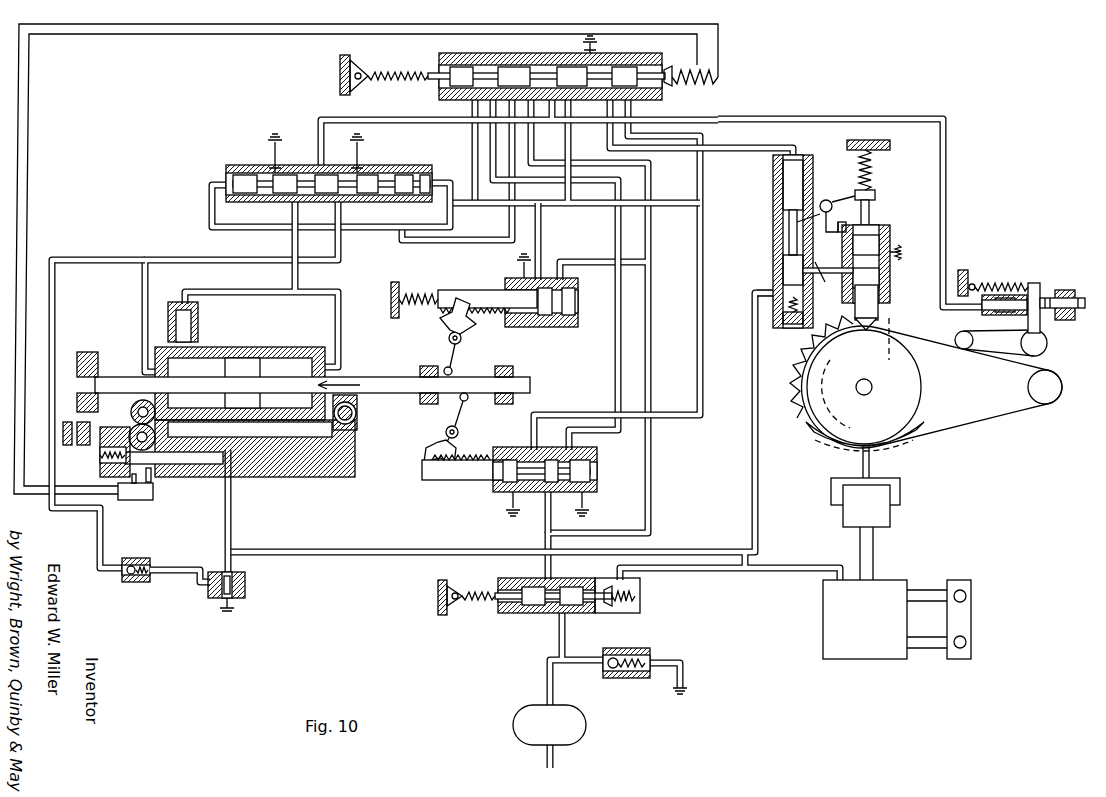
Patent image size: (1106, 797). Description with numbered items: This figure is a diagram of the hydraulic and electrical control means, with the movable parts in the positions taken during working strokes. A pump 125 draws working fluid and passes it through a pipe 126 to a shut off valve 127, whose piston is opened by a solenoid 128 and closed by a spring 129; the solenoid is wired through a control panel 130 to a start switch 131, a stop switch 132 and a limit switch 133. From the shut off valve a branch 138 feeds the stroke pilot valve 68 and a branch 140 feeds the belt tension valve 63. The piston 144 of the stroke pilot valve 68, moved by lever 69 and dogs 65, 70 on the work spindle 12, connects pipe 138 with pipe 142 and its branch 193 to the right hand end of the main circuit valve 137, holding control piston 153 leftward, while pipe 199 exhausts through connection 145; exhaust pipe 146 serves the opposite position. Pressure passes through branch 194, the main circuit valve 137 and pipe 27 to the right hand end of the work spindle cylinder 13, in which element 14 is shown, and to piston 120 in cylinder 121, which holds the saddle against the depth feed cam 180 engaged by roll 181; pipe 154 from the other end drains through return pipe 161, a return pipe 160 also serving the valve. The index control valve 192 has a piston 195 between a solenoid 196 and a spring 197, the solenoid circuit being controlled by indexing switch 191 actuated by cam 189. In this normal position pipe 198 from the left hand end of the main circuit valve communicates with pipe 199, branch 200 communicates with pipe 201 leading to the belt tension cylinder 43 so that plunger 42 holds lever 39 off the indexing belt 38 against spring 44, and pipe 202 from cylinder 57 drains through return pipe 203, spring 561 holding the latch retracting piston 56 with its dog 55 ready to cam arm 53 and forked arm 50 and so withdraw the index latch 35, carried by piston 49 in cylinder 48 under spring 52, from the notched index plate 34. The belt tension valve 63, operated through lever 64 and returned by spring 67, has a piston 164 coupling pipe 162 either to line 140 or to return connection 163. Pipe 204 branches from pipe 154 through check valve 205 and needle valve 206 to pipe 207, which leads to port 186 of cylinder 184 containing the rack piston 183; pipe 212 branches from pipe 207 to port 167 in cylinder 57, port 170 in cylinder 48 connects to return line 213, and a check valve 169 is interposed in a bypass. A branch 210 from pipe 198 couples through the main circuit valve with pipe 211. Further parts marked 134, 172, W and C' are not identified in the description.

The work spindle 12 is at (385, 393).
The work spindle cylinder 13 is at (300, 354).
The piston 14 is at (240, 372).
The pipe 27 is at (300, 276).
The index plate 34 is at (805, 377).
The index latch 35 is at (872, 335).
The belt 38 is at (1003, 418).
The belt tension lever 39 is at (1000, 347).
The plunger 42 is at (1008, 311).
The hydraulic cylinder 43 is at (982, 310).
The spring 44 is at (1005, 287).
The cylinder 48 is at (888, 230).
The piston 49 is at (880, 283).
The forked arm 50 is at (862, 206).
The spring 52 is at (870, 178).
The arm 53 is at (833, 236).
The dog 55 is at (826, 200).
The latch retracting piston 56 is at (790, 180).
The hydraulic cylinder 57 is at (775, 243).
The belt tension valve 63 is at (572, 290).
The lever 64 is at (460, 341).
The adjustable dog 65 is at (424, 372).
The spring 67 is at (420, 294).
The stroke pilot valve 68 is at (520, 447).
The actuating lever 69 is at (465, 400).
The dog 70 is at (510, 372).
The piston 120 is at (192, 335).
The cylinder 121 is at (196, 310).
The pump 125 is at (522, 712).
The pipe 126 is at (565, 630).
The shut off valve 127 is at (518, 613).
The solenoid 128 is at (633, 596).
The spring 129 is at (475, 585).
The control panel 130 is at (823, 625).
The start switch 131 is at (966, 594).
The stop switch 132 is at (966, 643).
The limit switch 133 is at (865, 512).
The relief valve 134 is at (642, 648).
The main circuit valve 137 is at (428, 170).
The branch pipe 138 is at (549, 528).
The branch pipe 140 is at (650, 350).
The pipe 142 is at (684, 416).
The piston 144 is at (490, 460).
The exhaust connection 145 is at (590, 498).
The exhaust pipe 146 is at (505, 500).
The control piston 153 is at (246, 178).
The pipe 154 is at (143, 302).
The return pipe 160 is at (278, 152).
The return pipe 161 is at (359, 152).
The pipe 162 is at (541, 223).
The return connection 163 is at (516, 270).
The piston 164 is at (465, 296).
The port 167 is at (770, 288).
The check valve 169 is at (830, 272).
The port 170 is at (848, 266).
The brake shoe 172 is at (812, 437).
The depth feed cam 180 is at (100, 462).
The roll 181 is at (131, 413).
The piston 183 is at (200, 465).
The hydraulic cylinder 184 is at (230, 450).
The port 186 is at (240, 470).
The cam 189 is at (151, 470).
The indexing switch 191 is at (143, 500).
The index control valve 192 is at (652, 66).
The branch pipe 193 is at (530, 205).
The branch pipe 194 is at (650, 176).
The piston 195 is at (652, 70).
The solenoid 196 is at (720, 78).
The spring 197 is at (372, 80).
The pipe 198 is at (392, 230).
The pipe 199 is at (615, 386).
The branch pipe 200 is at (533, 106).
The pipe 201 is at (946, 166).
The pipe 202 is at (738, 150).
The return pipe 203 is at (594, 44).
The pipe 204 is at (57, 305).
The check valve 205 is at (132, 558).
The adjustable needle valve 206 is at (246, 588).
The pipe 207 is at (231, 522).
The branch pipe 210 is at (378, 226).
The pipe 211 is at (511, 226).
The pipe 212 is at (752, 448).
The return line 213 is at (906, 250).
The spring 561 is at (795, 325).
The work W is at (90, 352).
The clamp C' is at (74, 421).